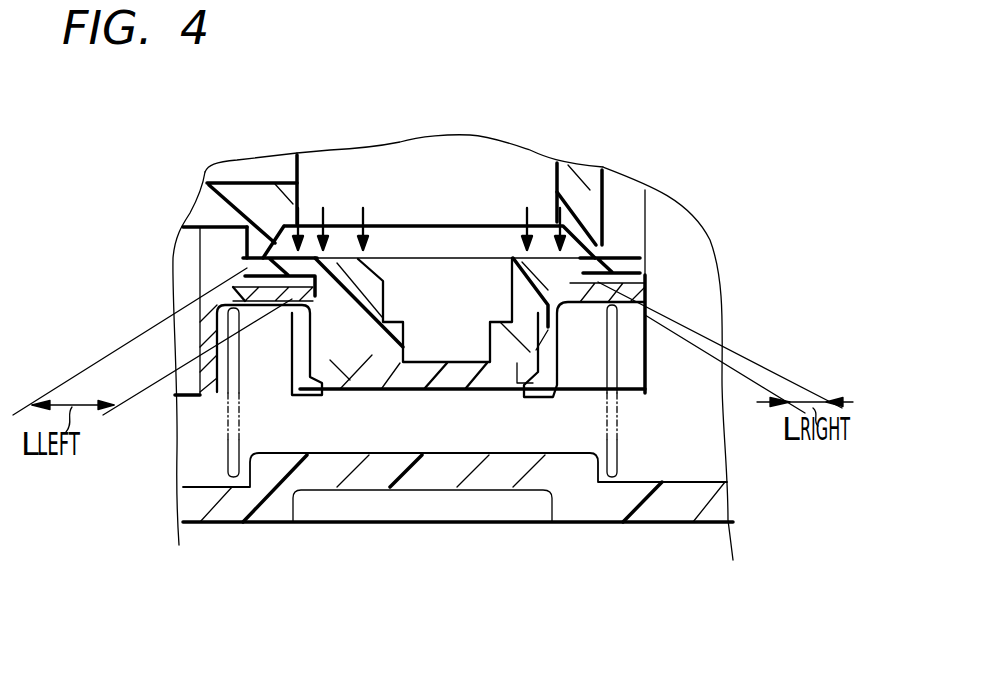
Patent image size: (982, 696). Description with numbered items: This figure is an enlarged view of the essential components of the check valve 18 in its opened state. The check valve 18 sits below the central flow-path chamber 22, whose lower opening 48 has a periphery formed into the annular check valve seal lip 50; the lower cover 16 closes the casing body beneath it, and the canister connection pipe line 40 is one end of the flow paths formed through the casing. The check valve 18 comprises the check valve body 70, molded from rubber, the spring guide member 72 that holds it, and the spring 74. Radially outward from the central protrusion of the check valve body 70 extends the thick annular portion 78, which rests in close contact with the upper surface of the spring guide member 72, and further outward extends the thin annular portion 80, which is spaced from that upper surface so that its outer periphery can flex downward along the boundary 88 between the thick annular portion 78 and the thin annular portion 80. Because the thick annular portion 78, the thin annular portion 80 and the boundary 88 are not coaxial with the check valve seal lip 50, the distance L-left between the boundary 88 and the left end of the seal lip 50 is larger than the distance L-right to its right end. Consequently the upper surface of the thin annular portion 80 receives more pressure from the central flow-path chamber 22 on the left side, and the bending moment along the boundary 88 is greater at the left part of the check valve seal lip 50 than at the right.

The lower cover 16 is at (580, 495).
The check valve 18 is at (479, 282).
The central flow-path chamber 22 is at (327, 160).
The canister connection pipe line 40 is at (205, 172).
The lower opening 48 is at (402, 240).
The check valve seal lip 50 is at (250, 247).
The check valve body 70 is at (504, 346).
The spring guide member 72 is at (640, 393).
The spring 74 is at (640, 525).
The thick annular portion 78 is at (333, 268).
The thin annular portion 80 is at (247, 268).
The boundary 88 is at (332, 328).